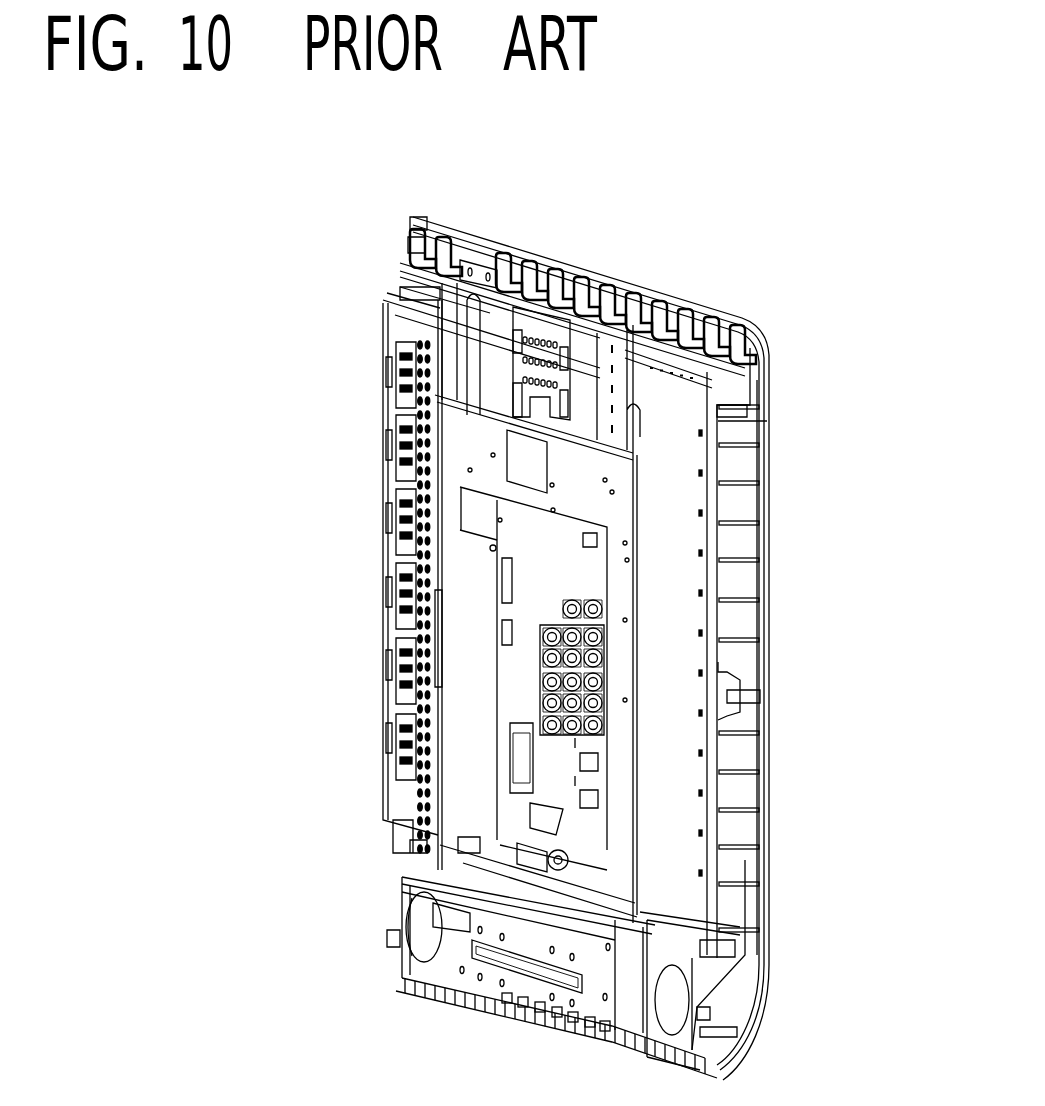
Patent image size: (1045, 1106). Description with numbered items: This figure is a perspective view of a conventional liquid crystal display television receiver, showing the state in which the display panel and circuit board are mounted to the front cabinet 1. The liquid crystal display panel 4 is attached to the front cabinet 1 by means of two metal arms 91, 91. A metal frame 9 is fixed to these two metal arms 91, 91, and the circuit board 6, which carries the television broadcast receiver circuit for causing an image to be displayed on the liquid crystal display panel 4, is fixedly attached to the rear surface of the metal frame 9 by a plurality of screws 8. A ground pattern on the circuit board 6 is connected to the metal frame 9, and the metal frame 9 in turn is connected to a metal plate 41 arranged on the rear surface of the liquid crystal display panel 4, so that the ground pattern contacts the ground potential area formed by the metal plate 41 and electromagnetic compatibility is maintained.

The front cabinet 1 is at (680, 293).
The liquid crystal display panel 4 is at (683, 822).
The metal plate 41 is at (683, 607).
The metal arms 91 is at (470, 347).
The metal frame 9 is at (460, 463).
The circuit board 6 is at (547, 768).
The screws 8 is at (490, 550).